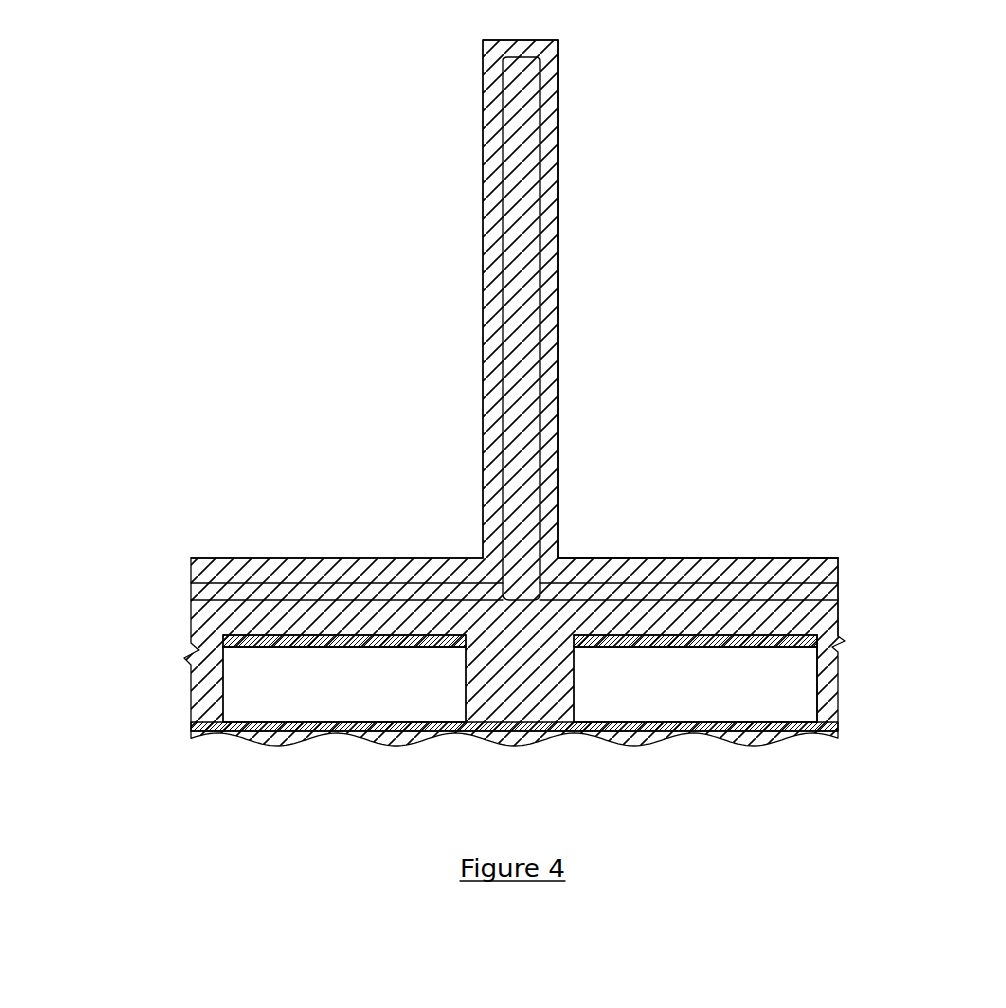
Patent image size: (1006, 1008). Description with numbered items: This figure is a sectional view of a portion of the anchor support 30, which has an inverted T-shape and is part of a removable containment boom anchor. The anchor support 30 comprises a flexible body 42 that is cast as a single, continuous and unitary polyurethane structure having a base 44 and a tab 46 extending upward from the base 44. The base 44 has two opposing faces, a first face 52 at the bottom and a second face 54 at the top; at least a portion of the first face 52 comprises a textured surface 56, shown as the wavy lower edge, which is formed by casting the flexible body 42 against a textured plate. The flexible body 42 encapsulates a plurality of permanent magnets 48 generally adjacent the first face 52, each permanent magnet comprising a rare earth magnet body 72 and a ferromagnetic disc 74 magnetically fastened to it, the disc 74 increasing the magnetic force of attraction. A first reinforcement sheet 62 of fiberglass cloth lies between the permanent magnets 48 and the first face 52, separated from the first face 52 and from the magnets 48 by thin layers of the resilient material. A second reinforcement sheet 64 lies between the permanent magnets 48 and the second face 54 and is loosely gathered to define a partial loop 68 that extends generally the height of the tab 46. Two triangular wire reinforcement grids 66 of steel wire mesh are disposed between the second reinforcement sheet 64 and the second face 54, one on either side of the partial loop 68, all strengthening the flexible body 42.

The anchor support 30 is at (537, 434).
The flexible body 42 is at (618, 557).
The base 44 is at (338, 562).
The tab 46 is at (486, 376).
The permanent magnets 48 is at (233, 708).
The first face 52 is at (765, 757).
The second face 54 is at (722, 549).
The textured surface 56 is at (651, 748).
The first reinforcement sheet 62 is at (833, 718).
The second reinforcement sheet 64 is at (820, 600).
The wire reinforcement grid 66 is at (228, 582).
The partial loop 68 is at (549, 318).
The rare earth magnet body 72 is at (240, 673).
The ferromagnetic disc 74 is at (240, 641).